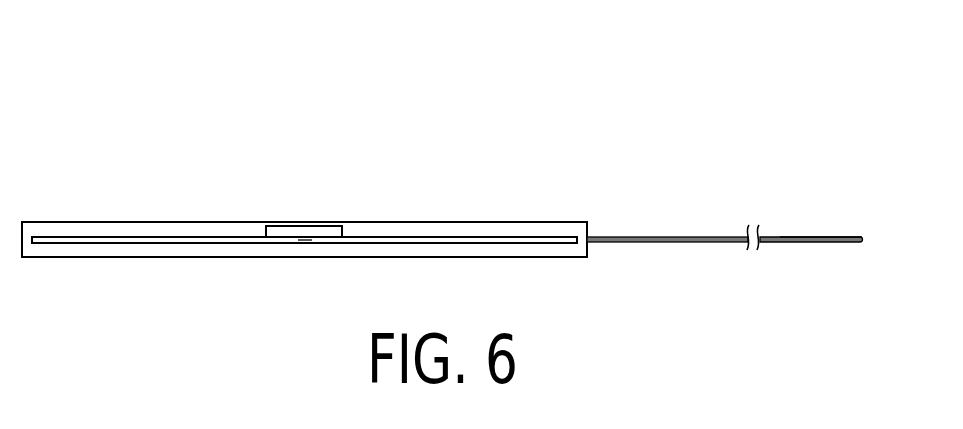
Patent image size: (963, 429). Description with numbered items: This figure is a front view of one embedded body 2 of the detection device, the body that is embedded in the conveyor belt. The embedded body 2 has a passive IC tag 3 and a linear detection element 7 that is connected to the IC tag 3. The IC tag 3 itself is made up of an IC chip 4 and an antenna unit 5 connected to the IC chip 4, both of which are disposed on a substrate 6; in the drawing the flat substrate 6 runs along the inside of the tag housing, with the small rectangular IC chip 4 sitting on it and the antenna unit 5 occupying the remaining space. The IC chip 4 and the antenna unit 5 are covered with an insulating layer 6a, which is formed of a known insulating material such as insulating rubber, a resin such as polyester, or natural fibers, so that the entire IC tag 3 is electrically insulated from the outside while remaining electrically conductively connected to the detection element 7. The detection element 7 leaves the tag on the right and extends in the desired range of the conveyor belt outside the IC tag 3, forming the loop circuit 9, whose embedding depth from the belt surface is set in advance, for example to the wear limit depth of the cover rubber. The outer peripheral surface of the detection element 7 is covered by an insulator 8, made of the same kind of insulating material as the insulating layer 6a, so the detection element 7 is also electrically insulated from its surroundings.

The embedded body 2 is at (354, 142).
The IC tag 3 is at (228, 222).
The IC chip 4 is at (306, 230).
The antenna unit 5 is at (122, 231).
The substrate 6 is at (393, 240).
The insulating layer 6a is at (463, 227).
The detection element 7 is at (623, 237).
The insulator 8 is at (680, 237).
The loop circuit 9 is at (780, 237).